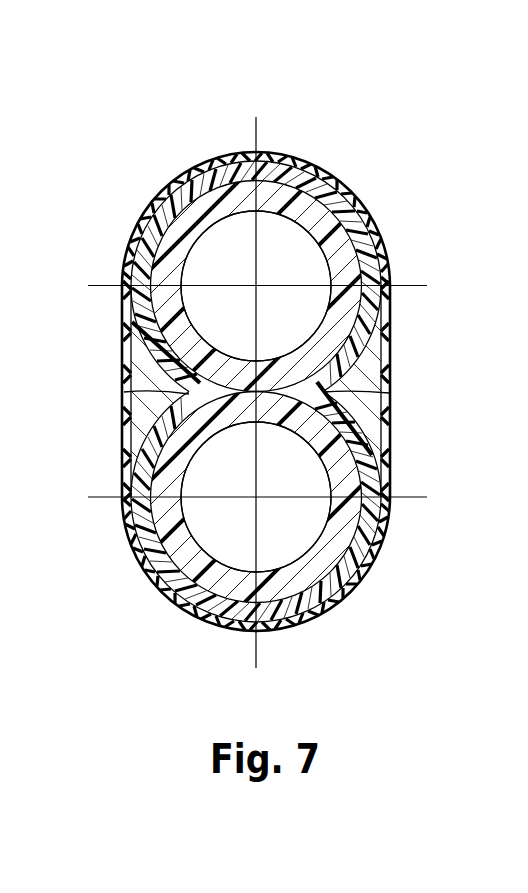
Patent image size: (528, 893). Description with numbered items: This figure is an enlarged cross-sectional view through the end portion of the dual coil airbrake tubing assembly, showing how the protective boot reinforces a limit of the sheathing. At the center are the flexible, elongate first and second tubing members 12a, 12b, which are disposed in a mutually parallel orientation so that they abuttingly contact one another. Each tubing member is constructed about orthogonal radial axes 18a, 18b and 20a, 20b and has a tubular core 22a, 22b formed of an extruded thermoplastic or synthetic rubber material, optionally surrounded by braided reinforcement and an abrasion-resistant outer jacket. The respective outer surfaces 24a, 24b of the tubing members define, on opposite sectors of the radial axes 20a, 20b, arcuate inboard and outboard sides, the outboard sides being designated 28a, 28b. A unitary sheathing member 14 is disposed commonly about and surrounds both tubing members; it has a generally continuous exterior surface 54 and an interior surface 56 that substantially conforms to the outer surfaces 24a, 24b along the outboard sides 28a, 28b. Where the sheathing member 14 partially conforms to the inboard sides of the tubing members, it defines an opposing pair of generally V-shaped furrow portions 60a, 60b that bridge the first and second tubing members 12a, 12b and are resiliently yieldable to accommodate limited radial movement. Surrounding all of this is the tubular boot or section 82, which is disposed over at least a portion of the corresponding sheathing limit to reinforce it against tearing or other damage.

The first tubing member 12a is at (290, 222).
The second tubing member 12b is at (295, 440).
The sheathing member 14 is at (214, 352).
The radial axis 18a is at (254, 127).
The radial axis 18b is at (258, 662).
The radial axis 20a is at (405, 284).
The radial axis 20b is at (413, 498).
The tubular core 22a is at (196, 250).
The tubular core 22b is at (132, 541).
The outer surface 24a is at (325, 272).
The outer surface 24b is at (320, 483).
The outboard side 28a is at (357, 205).
The outboard side 28b is at (320, 617).
The exterior surface 54 is at (305, 157).
The interior surface 56 is at (185, 170).
The furrow portion 60a is at (128, 388).
The furrow portion 60b is at (372, 393).
The tubular boot 82 is at (143, 208).